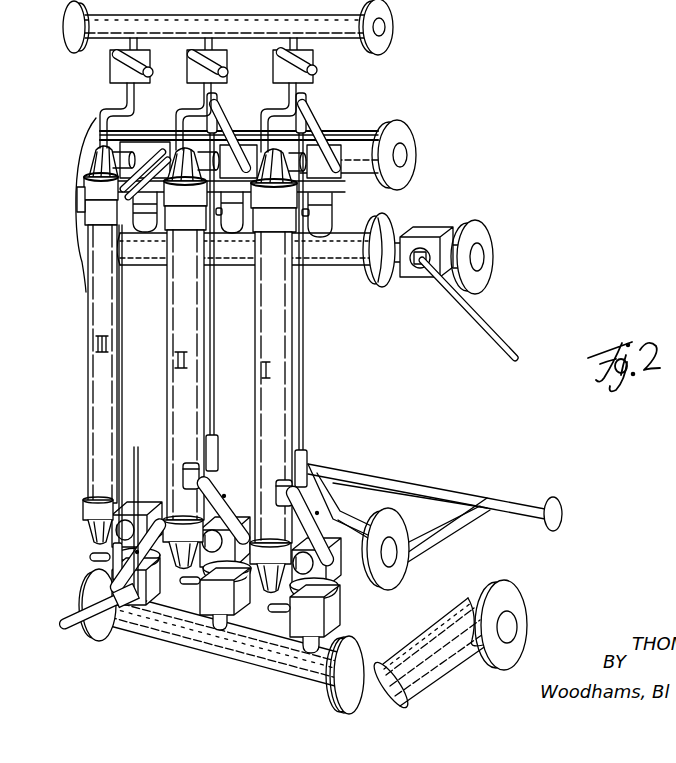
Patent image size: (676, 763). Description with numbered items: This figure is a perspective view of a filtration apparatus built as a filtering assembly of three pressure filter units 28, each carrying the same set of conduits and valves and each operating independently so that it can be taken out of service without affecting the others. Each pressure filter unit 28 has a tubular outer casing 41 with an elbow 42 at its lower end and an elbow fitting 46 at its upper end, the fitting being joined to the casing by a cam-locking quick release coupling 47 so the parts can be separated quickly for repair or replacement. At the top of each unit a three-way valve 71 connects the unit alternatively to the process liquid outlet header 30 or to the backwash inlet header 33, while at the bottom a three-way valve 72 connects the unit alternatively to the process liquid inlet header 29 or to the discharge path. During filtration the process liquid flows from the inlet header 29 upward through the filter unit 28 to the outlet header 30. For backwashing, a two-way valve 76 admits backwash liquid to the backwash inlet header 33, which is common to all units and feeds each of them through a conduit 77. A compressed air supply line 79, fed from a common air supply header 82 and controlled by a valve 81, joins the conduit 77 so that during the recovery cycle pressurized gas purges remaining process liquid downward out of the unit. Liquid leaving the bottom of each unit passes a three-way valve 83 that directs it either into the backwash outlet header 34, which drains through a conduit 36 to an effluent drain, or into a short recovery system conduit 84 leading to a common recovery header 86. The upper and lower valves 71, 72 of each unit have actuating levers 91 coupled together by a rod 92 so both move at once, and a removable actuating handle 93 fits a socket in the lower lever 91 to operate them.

The pressure filter unit 28 is at (160, 355).
The process liquid inlet header 29 is at (160, 487).
The process liquid outlet header 30 is at (357, 140).
The backwash inlet header 33 is at (345, 232).
The backwash outlet header 34 is at (274, 660).
The conduit 36 is at (433, 665).
The outer casing 41 is at (168, 362).
The elbow 42 is at (95, 522).
The elbow fitting 46 is at (97, 162).
The quick release coupling 47 is at (78, 205).
The three-way valve 71 is at (137, 143).
The three-way valve 72 is at (136, 470).
The two-way valve 76 is at (430, 232).
The conduit 77 is at (150, 235).
The air supply line 79 is at (270, 118).
The valve 81 is at (278, 70).
The air supply header 82 is at (338, 38).
The three-way valve 83 is at (214, 600).
The recovery system conduit 84 is at (356, 588).
The recovery header 86 is at (433, 492).
The actuating lever 91 is at (143, 160).
The rod 92 is at (118, 373).
The actuating handle 93 is at (78, 627).